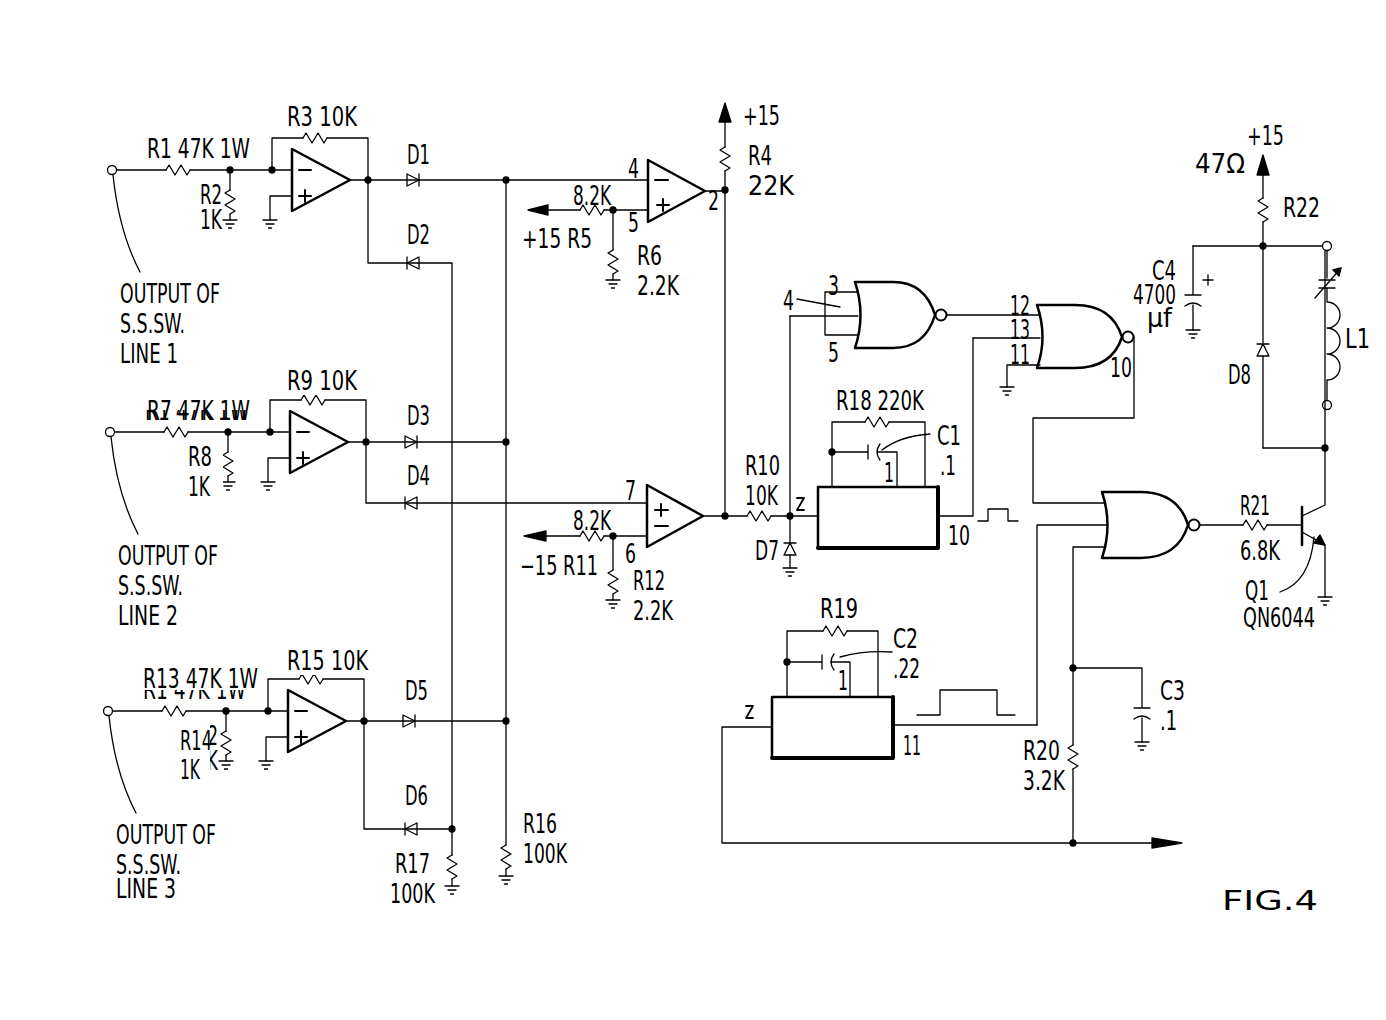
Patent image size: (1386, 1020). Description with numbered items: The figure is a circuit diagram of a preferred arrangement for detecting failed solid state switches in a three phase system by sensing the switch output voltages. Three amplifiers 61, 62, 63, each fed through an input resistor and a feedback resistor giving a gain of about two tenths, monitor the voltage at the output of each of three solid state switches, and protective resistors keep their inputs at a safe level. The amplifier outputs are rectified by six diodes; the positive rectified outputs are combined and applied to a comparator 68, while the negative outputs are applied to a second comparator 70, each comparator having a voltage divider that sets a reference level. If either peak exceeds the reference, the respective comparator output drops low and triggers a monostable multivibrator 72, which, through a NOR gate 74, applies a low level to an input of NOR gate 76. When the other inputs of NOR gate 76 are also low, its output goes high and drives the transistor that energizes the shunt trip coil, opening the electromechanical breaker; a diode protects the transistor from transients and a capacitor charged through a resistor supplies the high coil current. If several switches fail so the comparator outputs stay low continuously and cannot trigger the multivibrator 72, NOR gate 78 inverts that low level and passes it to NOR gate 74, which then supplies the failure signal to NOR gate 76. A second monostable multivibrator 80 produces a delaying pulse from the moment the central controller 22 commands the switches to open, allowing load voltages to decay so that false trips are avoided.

The amplifier 61 is at (306, 207).
The amplifier 62 is at (319, 464).
The amplifier 63 is at (317, 743).
The comparator 68 is at (661, 160).
The second comparator 70 is at (659, 485).
The monostable multivibrator 72 is at (923, 548).
The NOR gate 74 is at (1063, 304).
The NOR gate 76 is at (1148, 558).
The NOR gate 78 is at (880, 282).
The second monostable multivibrator 80 is at (805, 758).
The central controller 22 is at (1225, 812).